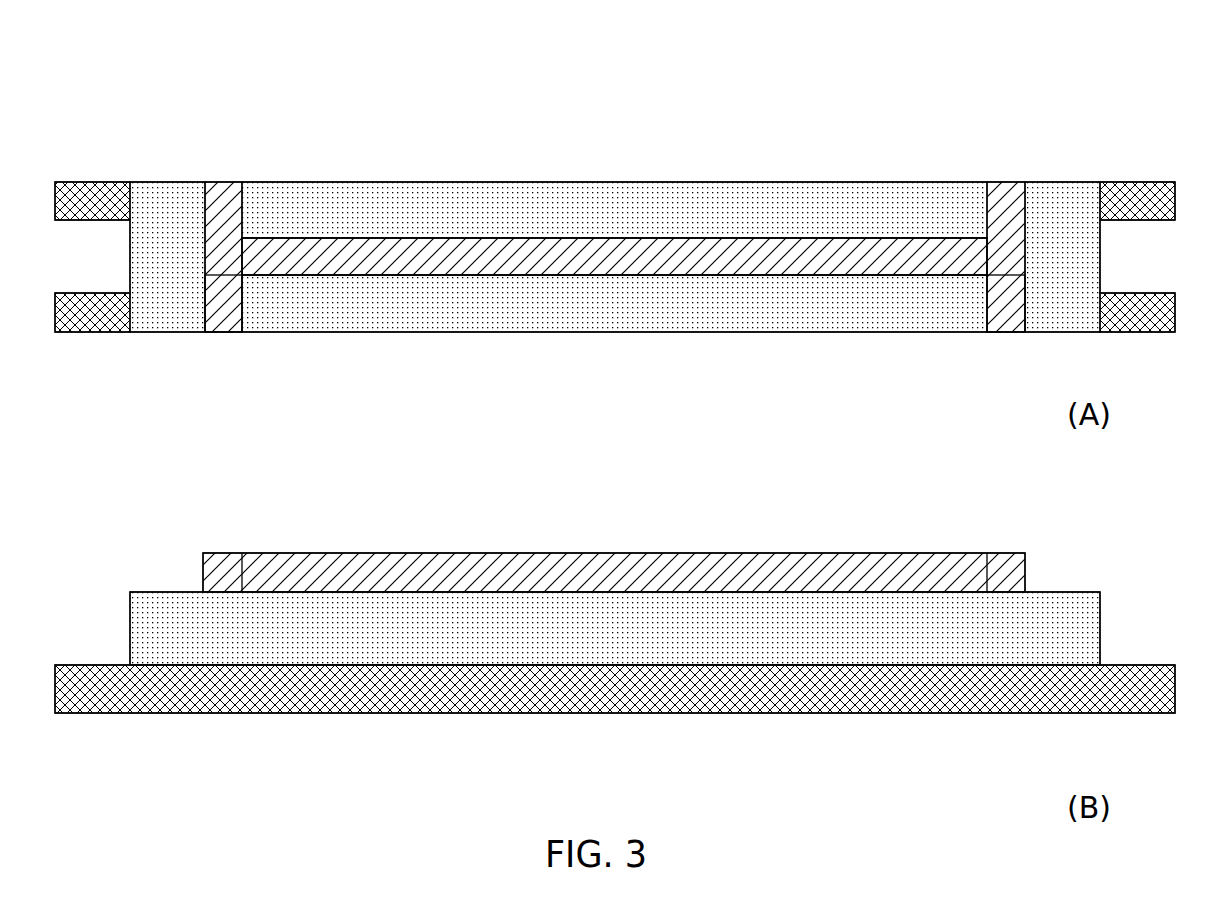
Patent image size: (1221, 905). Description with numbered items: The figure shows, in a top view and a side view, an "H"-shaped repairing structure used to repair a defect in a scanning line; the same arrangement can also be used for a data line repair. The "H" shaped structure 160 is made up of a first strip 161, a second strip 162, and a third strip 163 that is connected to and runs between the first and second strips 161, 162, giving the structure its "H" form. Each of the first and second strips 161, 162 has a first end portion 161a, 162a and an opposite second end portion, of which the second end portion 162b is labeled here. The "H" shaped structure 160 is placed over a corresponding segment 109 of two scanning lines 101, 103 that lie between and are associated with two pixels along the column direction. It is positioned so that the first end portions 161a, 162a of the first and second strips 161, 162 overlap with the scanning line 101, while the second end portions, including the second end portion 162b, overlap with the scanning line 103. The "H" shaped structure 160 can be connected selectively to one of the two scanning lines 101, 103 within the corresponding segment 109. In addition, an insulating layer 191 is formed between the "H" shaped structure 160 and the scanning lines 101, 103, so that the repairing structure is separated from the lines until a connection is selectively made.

In FIG. 3A, the scanning line 101 is at (90, 182).
In FIG. 3A, the scanning line 103 is at (92, 332).
In FIG. 3B, the scanning line 103 is at (92, 713).
In FIG. 3A, the corresponding segment 109 is at (438, 123).
In FIG. 3B, the corresponding segment 109 is at (551, 536).
In FIG. 3A, the H-shaped structure 160 is at (783, 238).
In FIG. 3B, the H-shaped structure 160 is at (280, 553).
In FIG. 3A, the first strip 161 is at (223, 258).
In FIG. 3A, the first end portion 161a is at (223, 198).
In FIG. 3A, the second strip 162 is at (1002, 257).
In FIG. 3A, the first end portion 162a is at (1005, 195).
In FIG. 3A, the second end portion 162b is at (223, 320).
In FIG. 3A, the third strip 163 is at (633, 257).
In FIG. 3A, the insulating layer 191 is at (540, 195).
In FIG. 3B, the insulating layer 191 is at (168, 636).